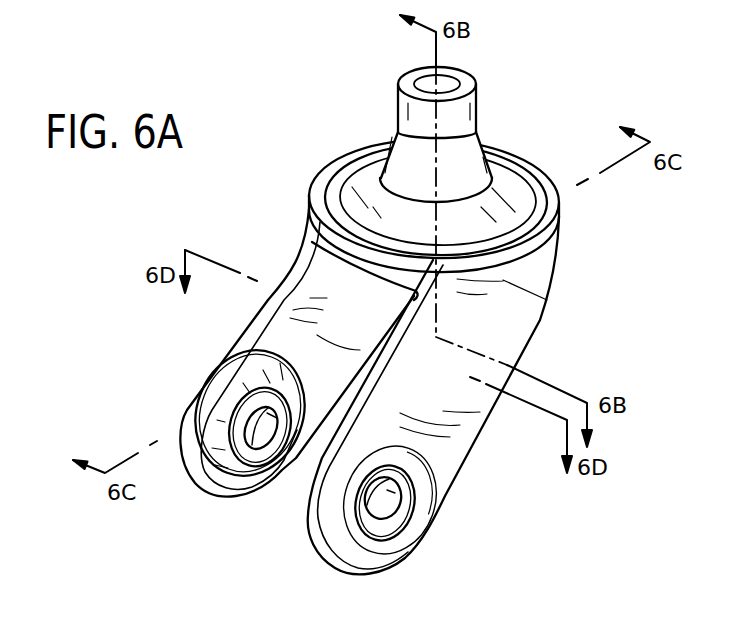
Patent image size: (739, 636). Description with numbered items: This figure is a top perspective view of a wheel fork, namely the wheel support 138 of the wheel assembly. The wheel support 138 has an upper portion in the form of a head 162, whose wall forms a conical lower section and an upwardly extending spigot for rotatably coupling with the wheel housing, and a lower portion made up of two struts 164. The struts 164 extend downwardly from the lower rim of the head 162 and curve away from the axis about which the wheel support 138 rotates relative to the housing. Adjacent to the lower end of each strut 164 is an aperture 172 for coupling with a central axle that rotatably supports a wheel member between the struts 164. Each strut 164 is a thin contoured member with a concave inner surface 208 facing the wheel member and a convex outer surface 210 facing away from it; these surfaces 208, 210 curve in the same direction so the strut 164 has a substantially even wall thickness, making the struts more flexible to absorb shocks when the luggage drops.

The wheel support 138 is at (513, 88).
The head 162 is at (468, 157).
The strut 164 is at (510, 333).
The aperture 172 is at (382, 505).
The inner surface 208 is at (284, 332).
The outer surface 210 is at (445, 443).